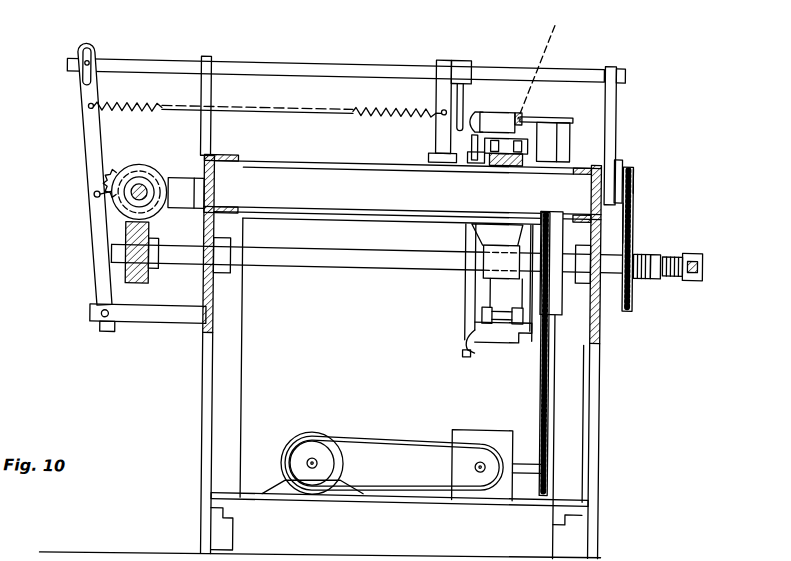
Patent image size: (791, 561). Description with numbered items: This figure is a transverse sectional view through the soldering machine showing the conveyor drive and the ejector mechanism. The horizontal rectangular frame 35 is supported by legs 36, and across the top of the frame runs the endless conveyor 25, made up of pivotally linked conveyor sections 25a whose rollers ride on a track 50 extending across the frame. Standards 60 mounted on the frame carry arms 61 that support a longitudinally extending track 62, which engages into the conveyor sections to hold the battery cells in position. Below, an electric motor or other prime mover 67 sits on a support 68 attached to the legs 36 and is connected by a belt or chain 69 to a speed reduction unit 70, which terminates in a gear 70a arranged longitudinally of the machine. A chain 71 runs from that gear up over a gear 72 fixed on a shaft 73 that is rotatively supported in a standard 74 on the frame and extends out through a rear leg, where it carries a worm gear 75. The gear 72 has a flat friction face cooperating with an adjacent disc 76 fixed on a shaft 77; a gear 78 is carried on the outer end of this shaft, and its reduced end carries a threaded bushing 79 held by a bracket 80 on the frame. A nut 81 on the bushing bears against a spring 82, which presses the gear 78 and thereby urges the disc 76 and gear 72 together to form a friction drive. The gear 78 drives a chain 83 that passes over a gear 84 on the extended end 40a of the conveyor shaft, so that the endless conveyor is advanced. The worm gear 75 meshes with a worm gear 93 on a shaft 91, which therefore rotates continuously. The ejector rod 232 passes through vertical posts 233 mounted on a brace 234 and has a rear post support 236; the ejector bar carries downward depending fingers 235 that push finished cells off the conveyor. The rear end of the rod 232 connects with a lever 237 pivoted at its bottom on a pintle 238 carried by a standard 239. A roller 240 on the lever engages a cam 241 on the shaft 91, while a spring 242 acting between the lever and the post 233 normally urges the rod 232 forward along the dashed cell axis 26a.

The endless conveyor 25 is at (468, 268).
The conveyor section 25a is at (470, 120).
The adjusting screw axis 26a is at (553, 63).
The frame 35 is at (220, 186).
The leg 36 is at (231, 312).
The extended end of shaft 40a is at (620, 182).
The track 50 is at (500, 151).
The standard 60 is at (565, 124).
The arm 61 is at (553, 106).
The track 62 is at (533, 104).
The prime mover 67 is at (317, 445).
The support 68 is at (255, 500).
The belt or chain 69 is at (393, 433).
The speed reduction unit 70 is at (480, 427).
The gear 70a is at (550, 461).
The chain 71 is at (553, 381).
The gear 72 is at (549, 200).
The shaft 73 is at (328, 252).
The standard 74 is at (490, 235).
The worm gear 75 is at (153, 229).
The disc 76 is at (562, 200).
The shaft 77 is at (617, 252).
The gear 78 is at (636, 284).
The threaded bushing 79 is at (693, 250).
The bracket 80 is at (706, 255).
The nut 81 is at (660, 244).
The spring 82 is at (648, 241).
The chain 83 is at (637, 200).
The gear 84 is at (636, 165).
The shaft 91 is at (150, 183).
The worm gear 93 is at (154, 165).
The rod 232 is at (350, 64).
The vertical post 233 is at (448, 50).
The brace 234 is at (466, 63).
The finger 235 is at (468, 92).
The rear post support 236 is at (208, 53).
The lever 237 is at (92, 155).
The pintle 238 is at (105, 316).
The standard 239 is at (163, 320).
The roller 240 is at (96, 193).
The cam 241 is at (122, 167).
The spring 242 is at (247, 102).